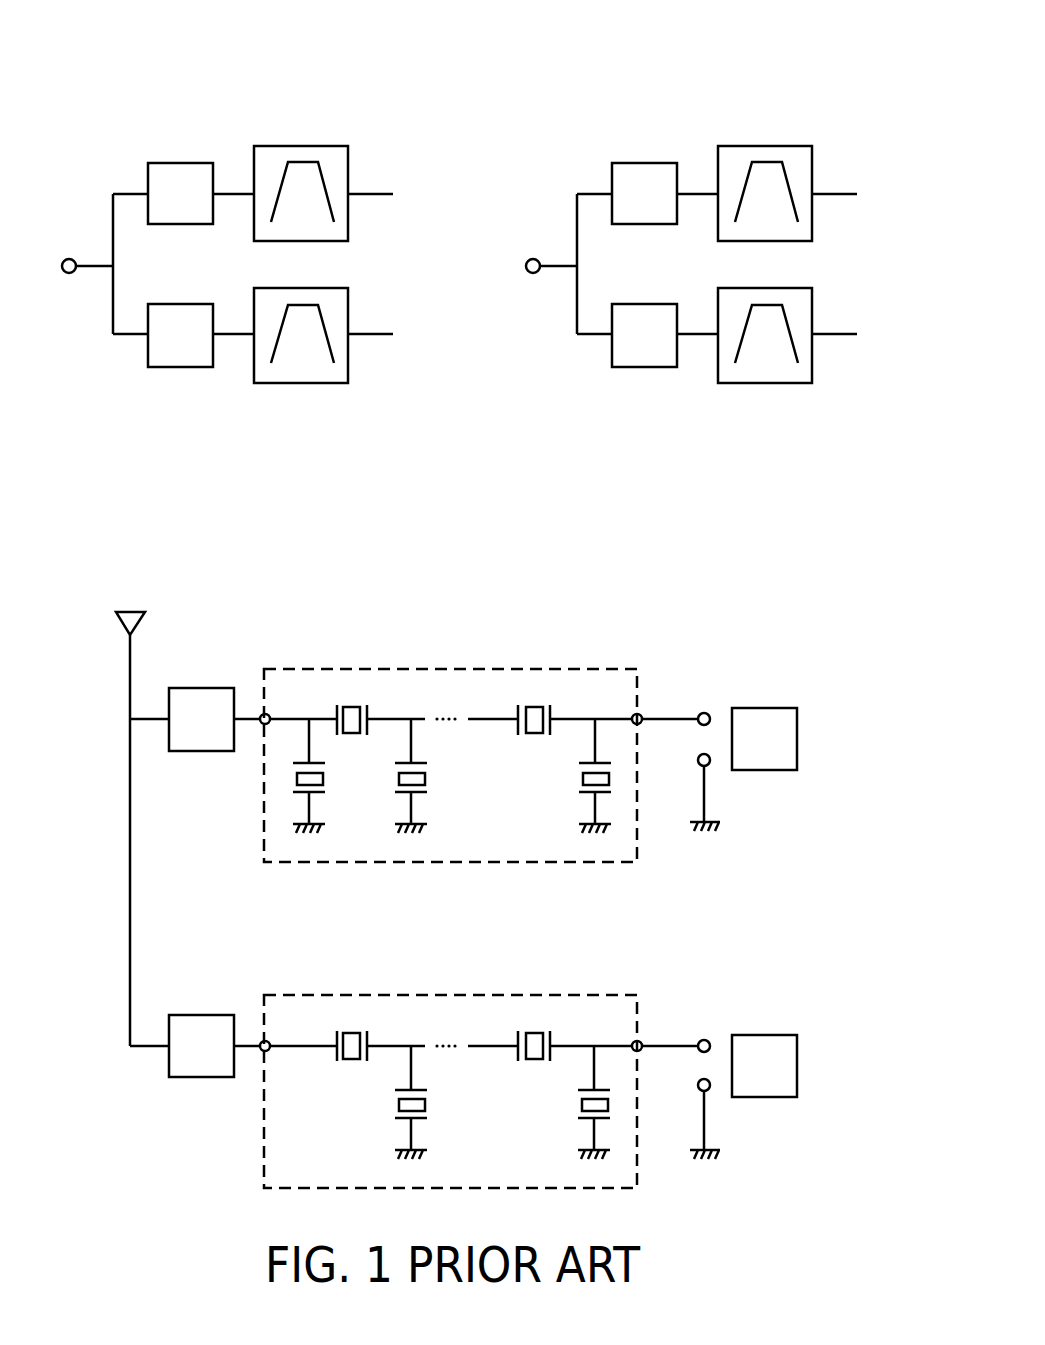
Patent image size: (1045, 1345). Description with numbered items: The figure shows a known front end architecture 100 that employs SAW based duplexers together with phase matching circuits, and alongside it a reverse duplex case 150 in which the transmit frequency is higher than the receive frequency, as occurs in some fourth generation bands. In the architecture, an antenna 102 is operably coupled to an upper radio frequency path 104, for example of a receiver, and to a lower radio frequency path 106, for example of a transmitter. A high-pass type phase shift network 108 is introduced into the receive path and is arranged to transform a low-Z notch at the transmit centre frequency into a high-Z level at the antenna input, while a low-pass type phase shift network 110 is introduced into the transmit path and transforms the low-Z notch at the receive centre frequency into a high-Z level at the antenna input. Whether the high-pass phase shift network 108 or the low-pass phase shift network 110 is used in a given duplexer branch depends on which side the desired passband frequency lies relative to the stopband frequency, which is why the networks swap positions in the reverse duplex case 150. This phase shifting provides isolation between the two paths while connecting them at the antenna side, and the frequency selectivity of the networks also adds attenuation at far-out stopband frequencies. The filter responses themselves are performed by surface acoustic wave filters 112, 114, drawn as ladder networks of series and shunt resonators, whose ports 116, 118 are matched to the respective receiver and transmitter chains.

The front end architecture 100 is at (530, 69).
The reverse duplex case 150 is at (832, 96).
The antenna 102 is at (128, 688).
The upper radio frequency path 104 is at (680, 574).
The lower radio frequency path 106 is at (679, 921).
The high-pass type phase shift network 108 is at (165, 224).
The low-pass type phase shift network 110 is at (163, 304).
The surface acoustic wave filter 112 is at (583, 668).
The surface acoustic wave filter 114 is at (583, 995).
The port 116 is at (378, 192).
The port 118 is at (378, 332).